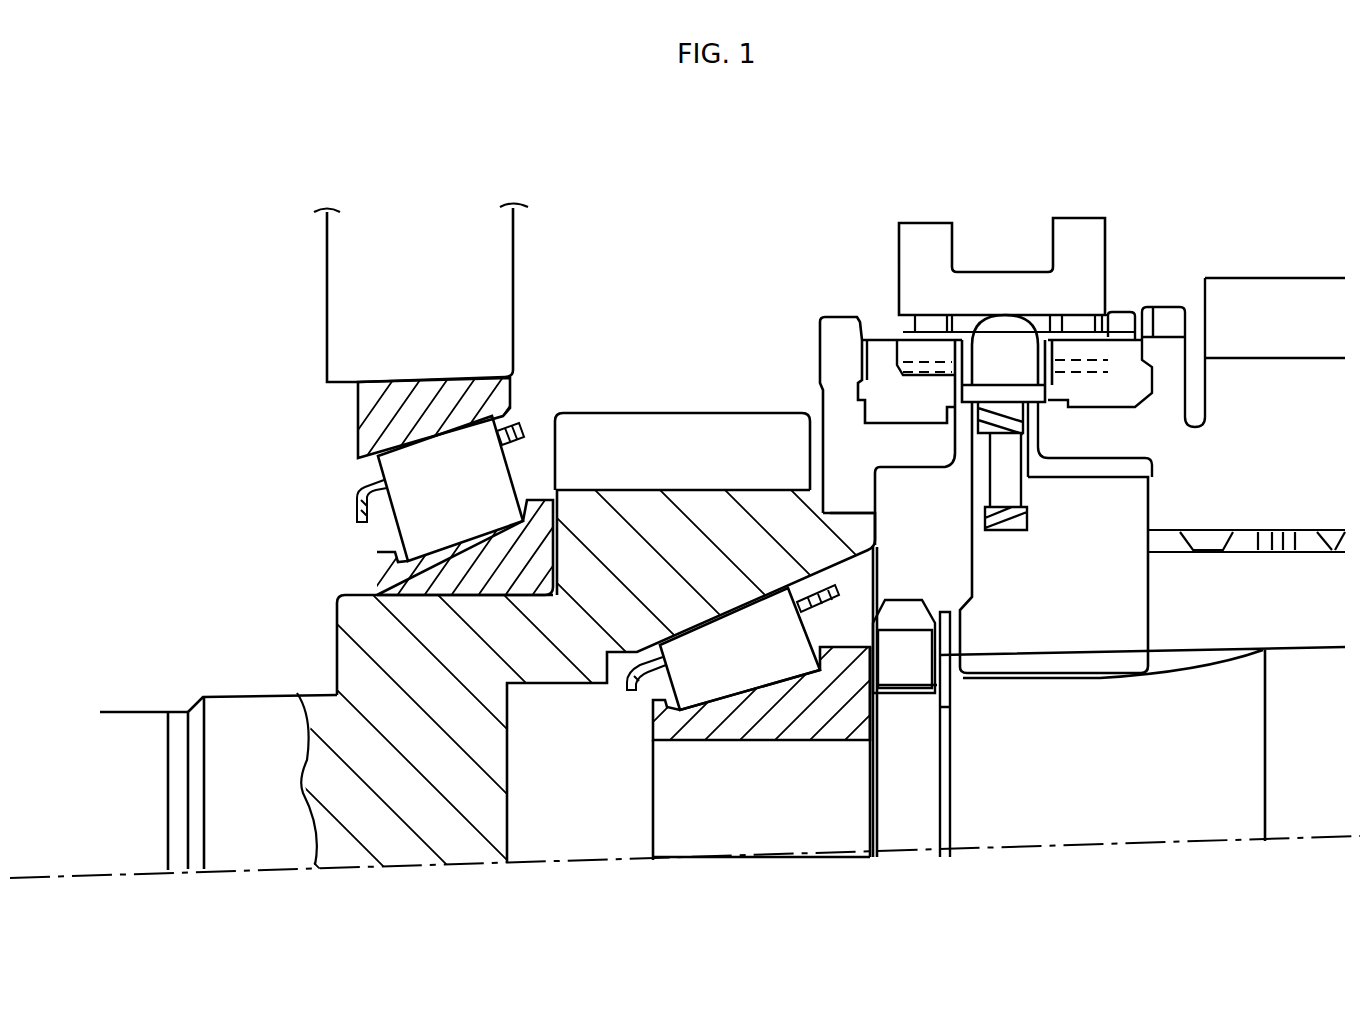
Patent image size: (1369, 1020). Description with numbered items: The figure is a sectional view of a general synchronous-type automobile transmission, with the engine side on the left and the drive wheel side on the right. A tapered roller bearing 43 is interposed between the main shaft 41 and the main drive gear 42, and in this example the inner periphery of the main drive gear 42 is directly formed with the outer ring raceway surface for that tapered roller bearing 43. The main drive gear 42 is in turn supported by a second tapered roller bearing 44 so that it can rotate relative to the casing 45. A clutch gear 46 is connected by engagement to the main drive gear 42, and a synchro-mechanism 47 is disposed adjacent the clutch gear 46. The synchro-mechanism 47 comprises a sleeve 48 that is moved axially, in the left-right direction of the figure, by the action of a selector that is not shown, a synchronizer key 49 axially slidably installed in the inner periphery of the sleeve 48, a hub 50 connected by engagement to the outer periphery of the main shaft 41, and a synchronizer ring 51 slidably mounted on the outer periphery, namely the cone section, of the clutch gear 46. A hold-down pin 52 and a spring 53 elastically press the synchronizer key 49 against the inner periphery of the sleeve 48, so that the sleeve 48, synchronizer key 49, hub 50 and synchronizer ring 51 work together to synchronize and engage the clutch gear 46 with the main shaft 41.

The main shaft 41 is at (1247, 755).
The main drive gear 42 is at (640, 505).
The tapered roller bearing 43 is at (619, 712).
The tapered roller bearing 44 is at (338, 519).
The casing 45 is at (486, 273).
The clutch gear 46 is at (835, 362).
The synchro-mechanism 47 is at (1148, 254).
The sleeve 48 is at (1079, 228).
The synchronizer key 49 is at (1088, 348).
The hub 50 is at (1130, 597).
The synchronizer ring 51 is at (887, 350).
The hold-down pin 52 is at (1010, 368).
The spring 53 is at (1020, 412).